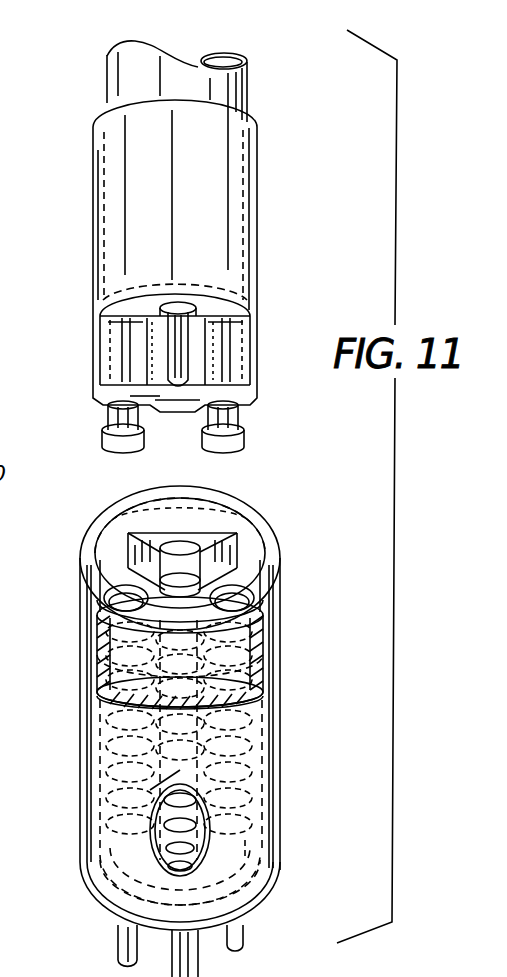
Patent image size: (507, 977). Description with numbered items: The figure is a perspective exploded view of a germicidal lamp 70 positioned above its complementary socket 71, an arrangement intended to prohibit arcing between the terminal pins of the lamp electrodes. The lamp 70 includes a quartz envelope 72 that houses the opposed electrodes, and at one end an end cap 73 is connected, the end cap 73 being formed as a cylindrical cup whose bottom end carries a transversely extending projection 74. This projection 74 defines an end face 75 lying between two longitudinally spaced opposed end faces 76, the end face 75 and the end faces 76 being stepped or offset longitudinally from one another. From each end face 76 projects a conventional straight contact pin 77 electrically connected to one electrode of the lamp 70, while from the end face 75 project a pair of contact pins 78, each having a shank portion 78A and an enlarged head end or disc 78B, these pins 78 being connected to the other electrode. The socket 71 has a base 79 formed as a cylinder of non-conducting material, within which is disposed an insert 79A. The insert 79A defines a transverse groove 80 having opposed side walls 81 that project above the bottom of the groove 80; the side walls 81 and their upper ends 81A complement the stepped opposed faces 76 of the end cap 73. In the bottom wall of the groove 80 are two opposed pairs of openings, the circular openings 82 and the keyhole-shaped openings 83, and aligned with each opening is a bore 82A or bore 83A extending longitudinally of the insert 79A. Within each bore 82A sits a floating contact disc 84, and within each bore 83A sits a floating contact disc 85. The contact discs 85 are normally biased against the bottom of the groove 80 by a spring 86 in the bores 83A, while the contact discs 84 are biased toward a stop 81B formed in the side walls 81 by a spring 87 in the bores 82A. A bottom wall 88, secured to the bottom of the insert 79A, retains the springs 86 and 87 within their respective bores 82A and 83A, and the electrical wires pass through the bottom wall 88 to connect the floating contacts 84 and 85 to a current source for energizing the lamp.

The germicidal lamp 70 is at (165, 254).
The complementary socket 71 is at (182, 714).
The quartz envelope 72 is at (119, 70).
The end cap 73 is at (93, 172).
The transversely extending projection 74 is at (118, 346).
The end face 75 is at (100, 415).
The opposed end faces 76 is at (207, 306).
The contact pin 77 is at (180, 354).
The contact pins 78 is at (116, 435).
The shank portion 78A is at (240, 419).
The enlarged head end 78B is at (238, 450).
The base 79 is at (80, 792).
The insert 79A is at (263, 564).
The transverse groove 80 is at (118, 566).
The opposed side walls 81 is at (175, 542).
The upper ends 81A is at (212, 530).
The stop 81B is at (130, 548).
The openings 82 is at (97, 682).
The bore 82A is at (160, 802).
The openings 83 is at (200, 952).
The bore 83A is at (270, 808).
The floating contact disc 84 is at (163, 548).
The floating contact disc 85 is at (116, 604).
The spring 86 is at (256, 730).
The spring 87 is at (140, 910).
The bottom wall 88 is at (272, 854).